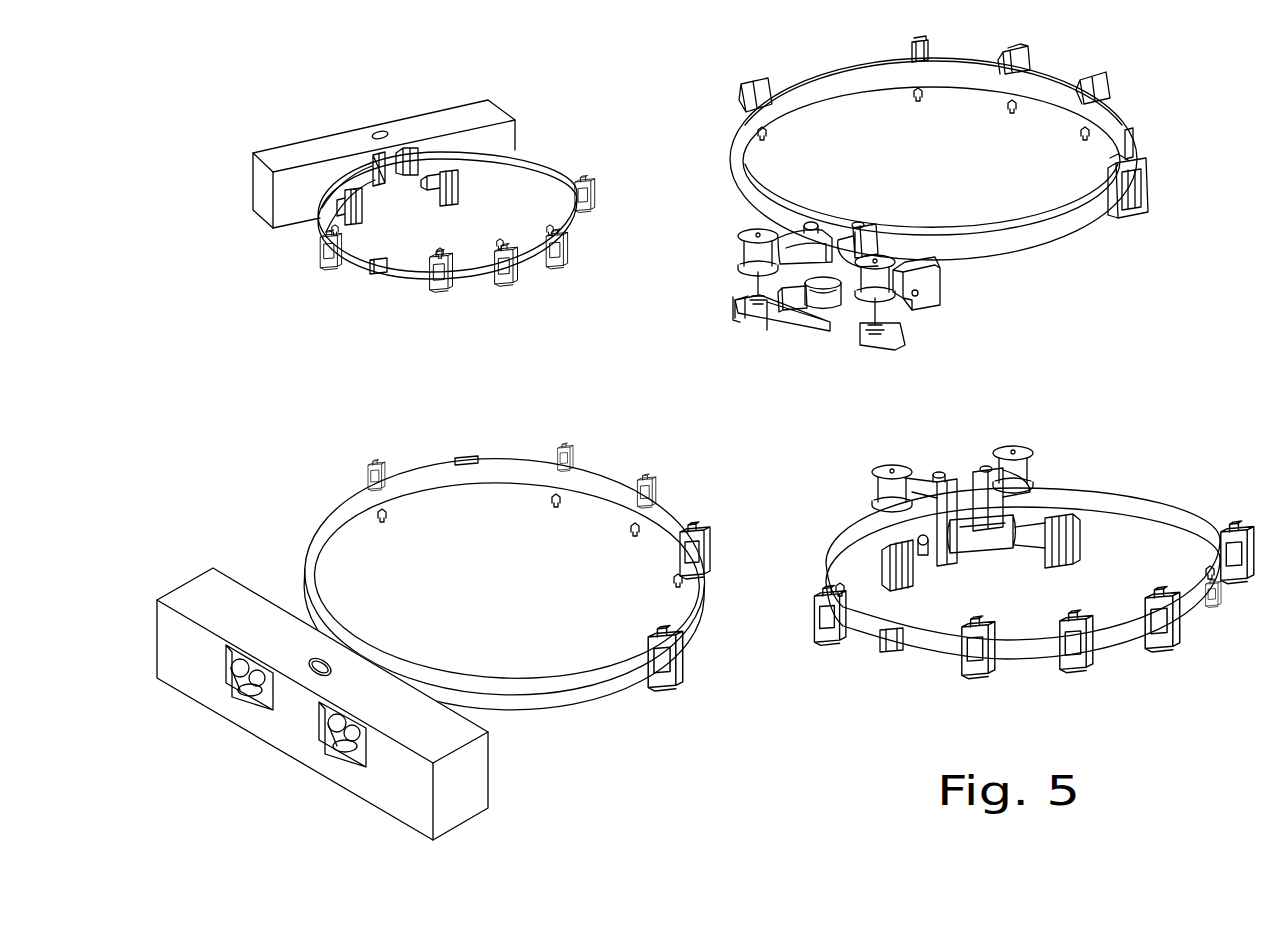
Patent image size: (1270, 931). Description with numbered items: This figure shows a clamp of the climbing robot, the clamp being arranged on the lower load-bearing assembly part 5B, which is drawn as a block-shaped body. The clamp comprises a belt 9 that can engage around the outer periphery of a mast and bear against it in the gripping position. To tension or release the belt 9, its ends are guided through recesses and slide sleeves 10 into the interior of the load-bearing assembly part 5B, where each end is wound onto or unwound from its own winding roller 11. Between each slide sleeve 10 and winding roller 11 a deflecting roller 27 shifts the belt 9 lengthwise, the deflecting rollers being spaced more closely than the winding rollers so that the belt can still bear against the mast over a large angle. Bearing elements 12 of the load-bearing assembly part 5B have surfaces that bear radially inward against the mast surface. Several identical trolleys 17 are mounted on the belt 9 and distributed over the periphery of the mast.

The lower load-bearing assembly part 5B is at (453, 765).
The belt 9 is at (1096, 226).
The slide sleeve 10 is at (824, 214).
The winding roller 11 is at (752, 257).
The bearing element 12 is at (463, 187).
The trolley 17 is at (1108, 84).
The deflecting roller 27 is at (941, 274).